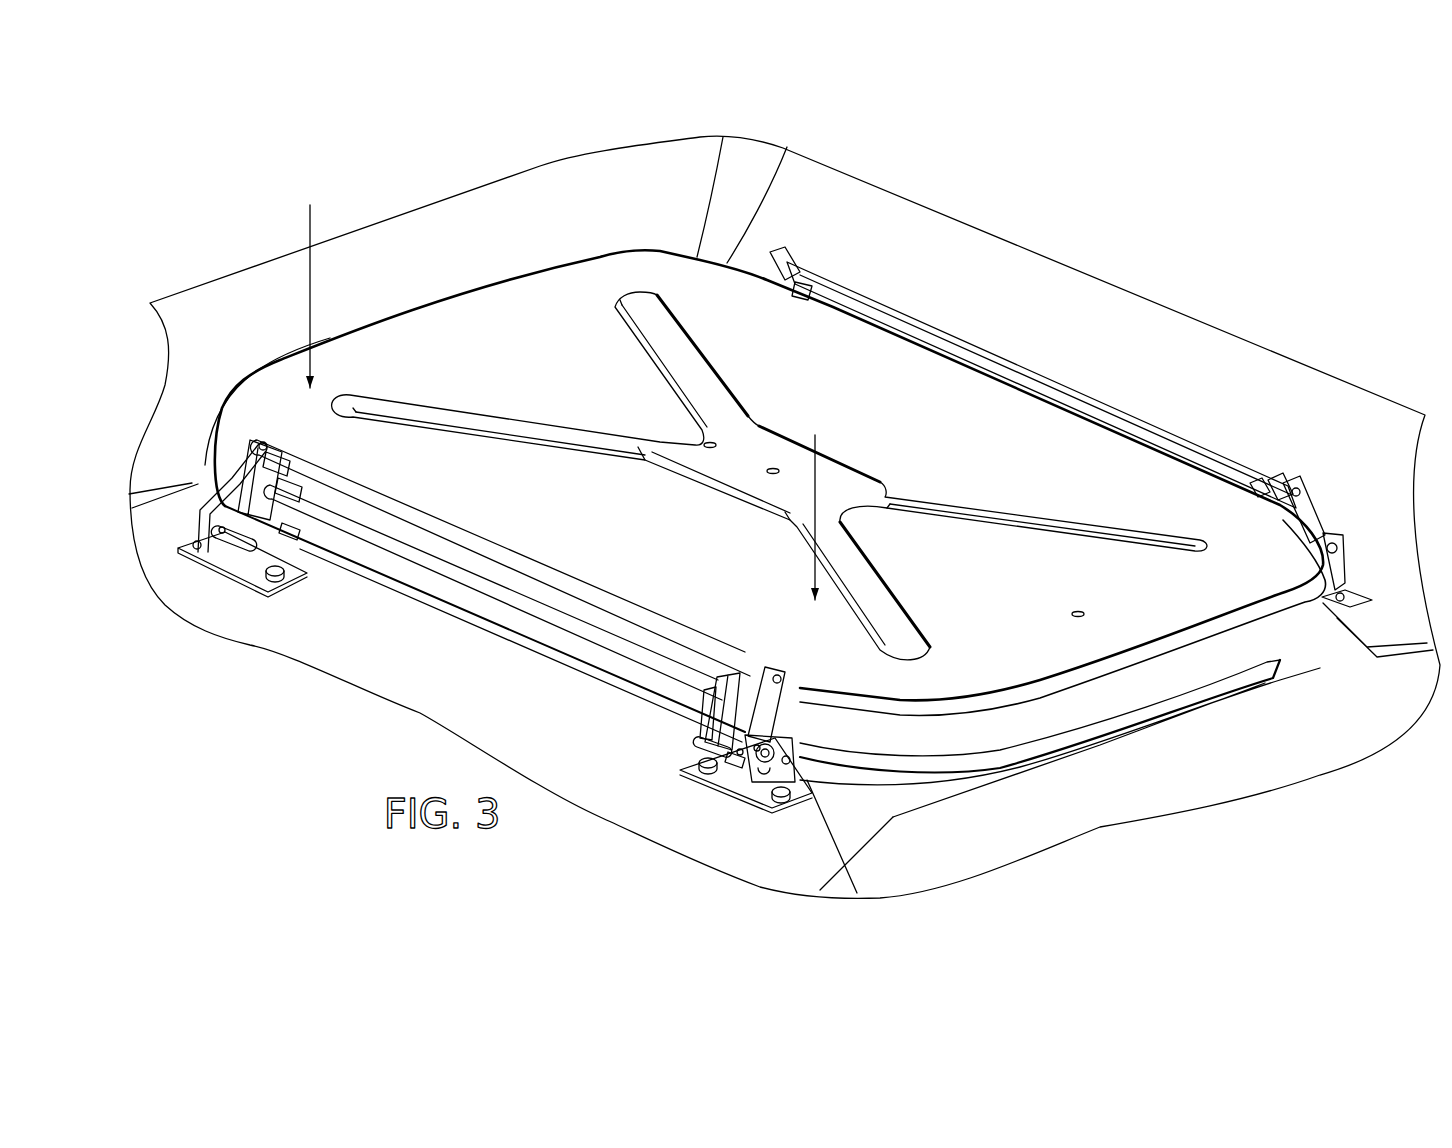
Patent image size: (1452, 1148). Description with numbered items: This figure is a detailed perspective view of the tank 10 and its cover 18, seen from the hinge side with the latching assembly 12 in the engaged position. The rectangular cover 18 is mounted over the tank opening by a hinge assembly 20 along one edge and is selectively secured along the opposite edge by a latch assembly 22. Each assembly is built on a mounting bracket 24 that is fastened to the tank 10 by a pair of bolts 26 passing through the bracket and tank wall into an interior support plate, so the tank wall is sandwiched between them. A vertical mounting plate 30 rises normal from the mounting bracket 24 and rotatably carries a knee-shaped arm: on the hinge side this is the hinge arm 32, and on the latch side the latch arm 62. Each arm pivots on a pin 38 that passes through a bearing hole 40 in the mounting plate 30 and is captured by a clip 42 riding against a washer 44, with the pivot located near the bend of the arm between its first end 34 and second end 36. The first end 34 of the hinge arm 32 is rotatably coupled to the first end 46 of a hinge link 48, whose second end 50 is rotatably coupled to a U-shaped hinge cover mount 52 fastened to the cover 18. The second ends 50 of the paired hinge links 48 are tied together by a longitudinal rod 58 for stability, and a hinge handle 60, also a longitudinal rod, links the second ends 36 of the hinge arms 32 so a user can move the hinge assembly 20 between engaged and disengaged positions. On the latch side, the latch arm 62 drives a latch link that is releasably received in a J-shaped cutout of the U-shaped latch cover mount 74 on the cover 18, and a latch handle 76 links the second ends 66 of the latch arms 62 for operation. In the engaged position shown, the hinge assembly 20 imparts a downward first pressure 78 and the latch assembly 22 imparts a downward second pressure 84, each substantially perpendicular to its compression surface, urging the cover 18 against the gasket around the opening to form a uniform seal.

The tank 10 is at (1050, 331).
The latching assembly 12 is at (568, 250).
The cover 18 is at (750, 346).
The hinge assembly 20 is at (770, 637).
The latch assembly 22 is at (1076, 386).
The mounting bracket 24 is at (196, 553).
The bolts 26 is at (196, 543).
The vertical mounting plate 30 is at (212, 487).
The hinge arm 32 is at (230, 488).
The first end of the hinge arm 34 is at (222, 558).
The second end of the hinge arm 36 is at (263, 442).
The pin 38 is at (766, 770).
The bearing hole 40 is at (790, 762).
The clip 42 is at (800, 751).
The washer 44 is at (762, 762).
The first end of the hinge link 46 is at (235, 560).
The hinge link 48 is at (290, 535).
The second end of the hinge link 50 is at (280, 460).
The hinge cover mount 52 is at (300, 490).
The longitudinal rod 58 is at (544, 602).
The hinge handle 60 is at (452, 524).
The latch arm 62 is at (770, 247).
The second end of the latch arm 66 is at (1283, 485).
The latch cover mount 74 is at (802, 298).
The latch handle 76 is at (920, 316).
The first pressure 78 is at (680, 296).
The second pressure 84 is at (562, 388).